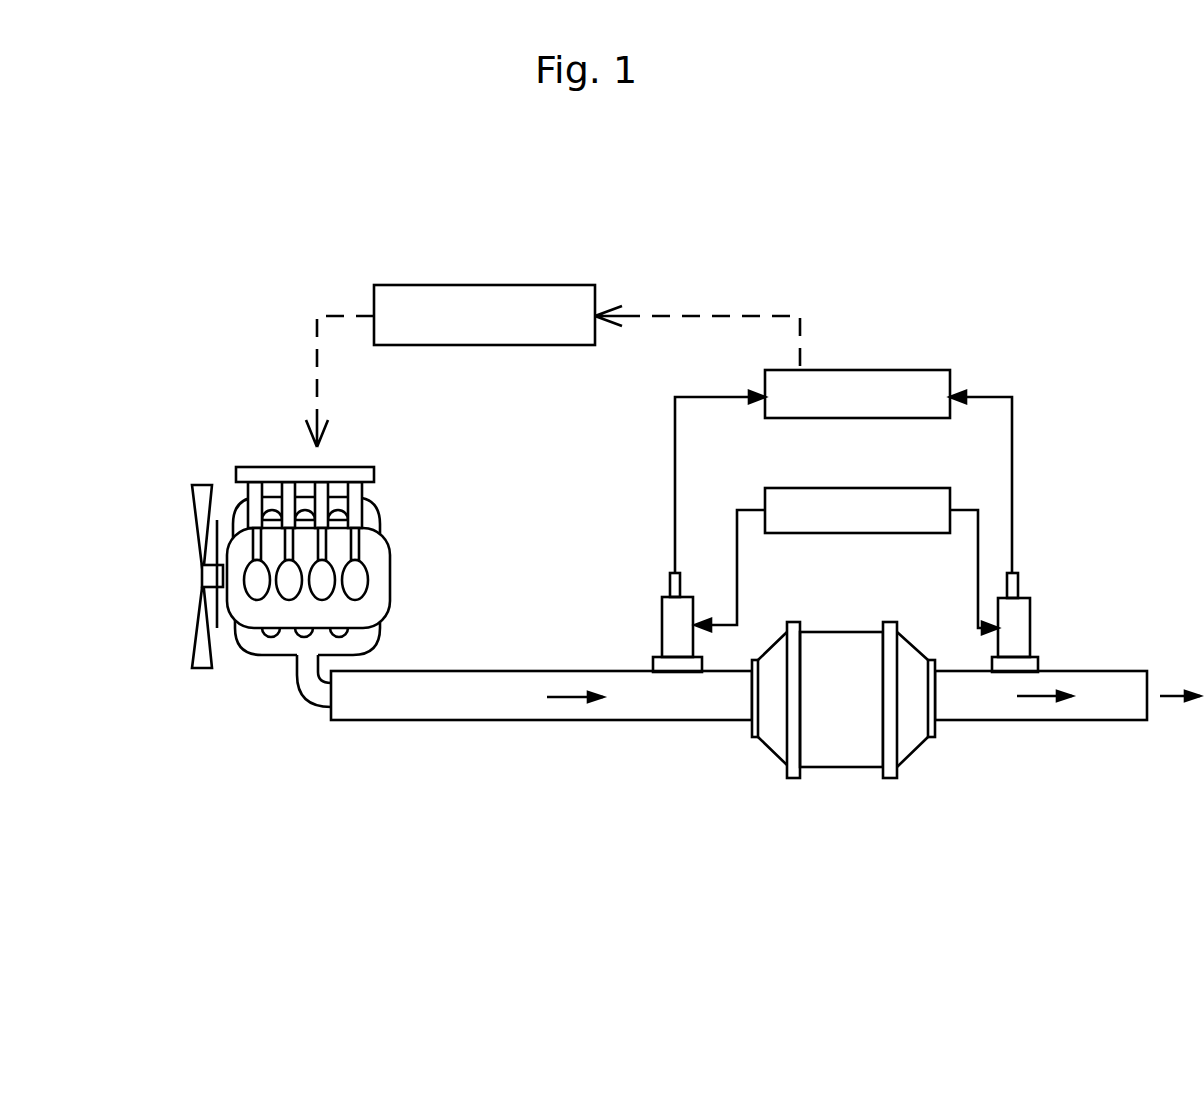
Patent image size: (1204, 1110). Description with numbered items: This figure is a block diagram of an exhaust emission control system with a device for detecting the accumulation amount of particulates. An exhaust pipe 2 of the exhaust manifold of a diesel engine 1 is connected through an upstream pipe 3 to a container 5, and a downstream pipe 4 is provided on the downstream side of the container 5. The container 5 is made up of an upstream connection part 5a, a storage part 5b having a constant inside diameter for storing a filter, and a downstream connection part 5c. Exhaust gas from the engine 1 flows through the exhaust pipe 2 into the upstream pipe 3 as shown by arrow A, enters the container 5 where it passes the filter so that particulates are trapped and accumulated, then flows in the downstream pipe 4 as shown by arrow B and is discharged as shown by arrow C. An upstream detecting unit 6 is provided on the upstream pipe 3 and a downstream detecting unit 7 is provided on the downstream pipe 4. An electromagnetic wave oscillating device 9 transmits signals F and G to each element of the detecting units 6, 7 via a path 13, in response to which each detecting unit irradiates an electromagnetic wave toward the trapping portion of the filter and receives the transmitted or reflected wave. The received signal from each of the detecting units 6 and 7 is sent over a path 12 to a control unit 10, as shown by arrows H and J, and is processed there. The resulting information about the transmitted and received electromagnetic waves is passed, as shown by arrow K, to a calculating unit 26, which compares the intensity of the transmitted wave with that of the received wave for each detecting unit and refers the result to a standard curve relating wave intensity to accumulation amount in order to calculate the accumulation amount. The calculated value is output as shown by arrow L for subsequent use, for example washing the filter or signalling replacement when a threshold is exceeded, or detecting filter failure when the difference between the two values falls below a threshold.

The diesel engine 1 is at (380, 548).
The exhaust pipe 2 is at (313, 695).
The upstream pipe 3 is at (472, 682).
The downstream pipe 4 is at (1115, 717).
The container 5 is at (850, 668).
The upstream connection part 5a is at (778, 652).
The storage part 5b is at (822, 637).
The downstream connection part 5c is at (905, 648).
The upstream detecting unit 6 is at (690, 613).
The downstream detecting unit 7 is at (1025, 623).
The electromagnetic wave oscillating device 9 is at (918, 497).
The control unit 10 is at (920, 377).
The path 12 is at (675, 478).
The path 13 is at (737, 570).
The calculating unit 26 is at (495, 285).
The arrow A is at (563, 697).
The arrow B is at (1052, 697).
The arrow C is at (1175, 695).
The signal F is at (723, 672).
The signal G is at (973, 675).
The arrow H is at (675, 427).
The arrow J is at (1012, 440).
The arrow K is at (763, 317).
The arrow L is at (317, 313).